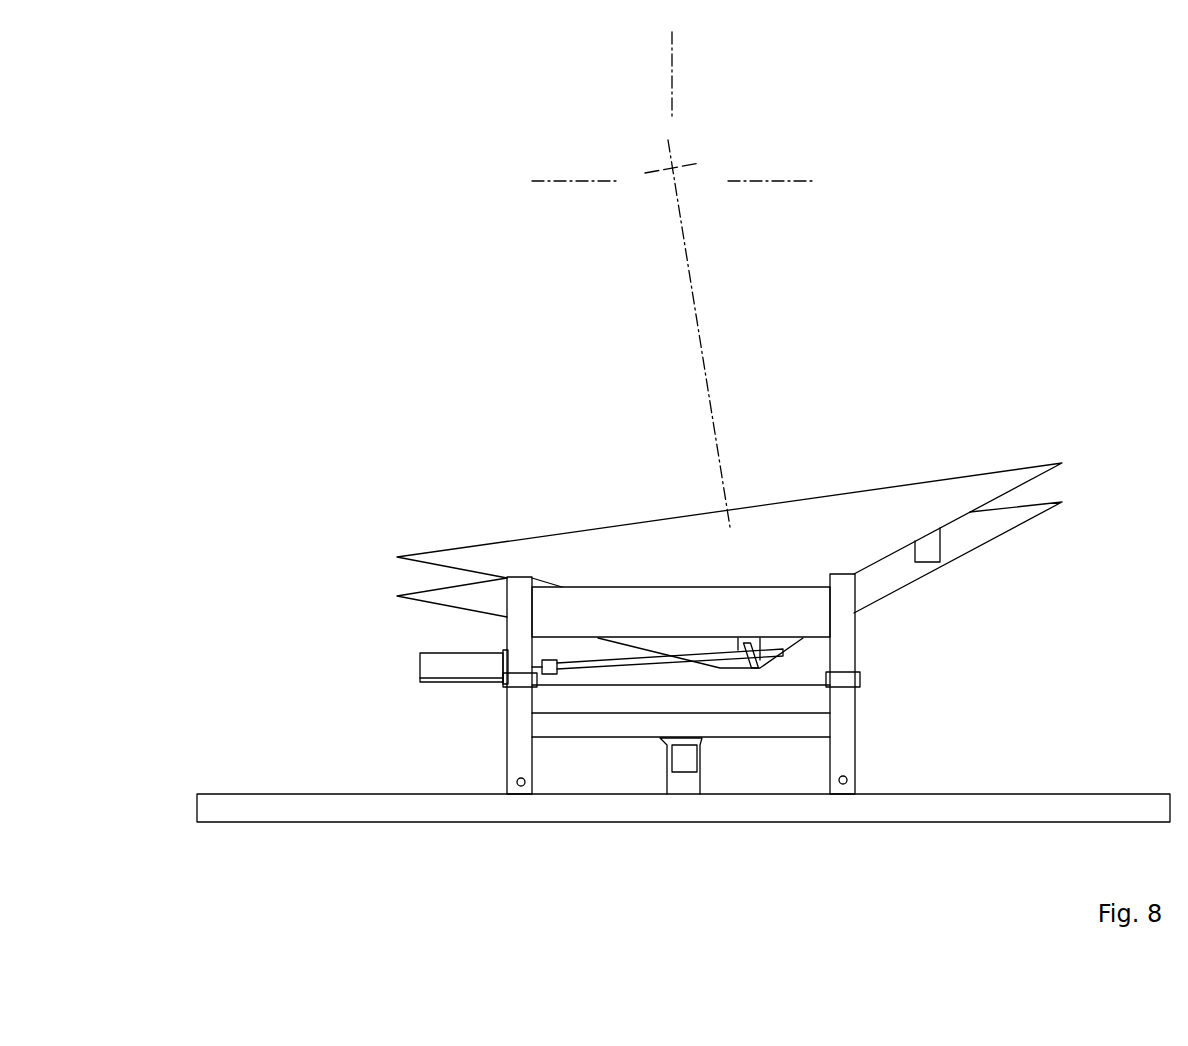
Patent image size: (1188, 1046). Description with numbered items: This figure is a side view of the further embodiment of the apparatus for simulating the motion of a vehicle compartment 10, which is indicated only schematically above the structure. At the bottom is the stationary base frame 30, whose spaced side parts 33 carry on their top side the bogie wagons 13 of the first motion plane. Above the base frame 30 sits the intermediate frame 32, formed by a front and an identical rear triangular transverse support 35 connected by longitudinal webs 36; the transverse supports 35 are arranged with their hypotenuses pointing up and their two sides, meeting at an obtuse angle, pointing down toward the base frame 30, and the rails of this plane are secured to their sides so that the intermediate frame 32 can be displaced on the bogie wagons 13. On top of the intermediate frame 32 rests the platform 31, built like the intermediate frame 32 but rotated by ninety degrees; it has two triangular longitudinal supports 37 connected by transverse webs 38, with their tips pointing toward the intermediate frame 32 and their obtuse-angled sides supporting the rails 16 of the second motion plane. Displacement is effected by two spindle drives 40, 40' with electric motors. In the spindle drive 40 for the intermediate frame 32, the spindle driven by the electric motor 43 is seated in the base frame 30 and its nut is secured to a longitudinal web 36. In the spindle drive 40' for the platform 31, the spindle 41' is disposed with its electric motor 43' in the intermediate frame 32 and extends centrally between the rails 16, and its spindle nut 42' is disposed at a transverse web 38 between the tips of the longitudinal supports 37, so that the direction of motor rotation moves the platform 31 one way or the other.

The vehicle compartment 10 is at (700, 337).
The bogie wagon 13 is at (517, 682).
The rail 16 is at (957, 527).
The base frame 30 is at (507, 796).
The platform 31 is at (978, 470).
The intermediate frame 32 is at (858, 663).
The side part 33 is at (735, 780).
The transverse support 35 is at (842, 590).
The longitudinal web 36 is at (780, 605).
The longitudinal support 37 is at (458, 597).
The transverse web 38 is at (740, 645).
The spindle drive 40 is at (646, 816).
The spindle drive 40' is at (413, 699).
The spindle 41' is at (648, 771).
The spindle nut 42' is at (710, 766).
The electric motor 43 is at (690, 819).
The electric motor 43' is at (414, 667).